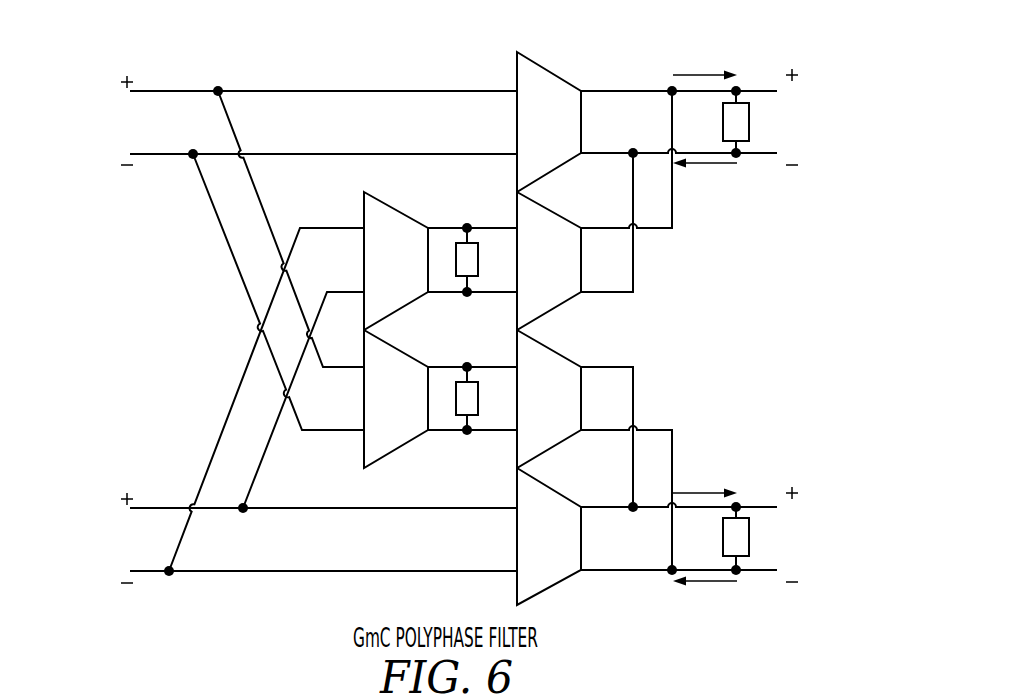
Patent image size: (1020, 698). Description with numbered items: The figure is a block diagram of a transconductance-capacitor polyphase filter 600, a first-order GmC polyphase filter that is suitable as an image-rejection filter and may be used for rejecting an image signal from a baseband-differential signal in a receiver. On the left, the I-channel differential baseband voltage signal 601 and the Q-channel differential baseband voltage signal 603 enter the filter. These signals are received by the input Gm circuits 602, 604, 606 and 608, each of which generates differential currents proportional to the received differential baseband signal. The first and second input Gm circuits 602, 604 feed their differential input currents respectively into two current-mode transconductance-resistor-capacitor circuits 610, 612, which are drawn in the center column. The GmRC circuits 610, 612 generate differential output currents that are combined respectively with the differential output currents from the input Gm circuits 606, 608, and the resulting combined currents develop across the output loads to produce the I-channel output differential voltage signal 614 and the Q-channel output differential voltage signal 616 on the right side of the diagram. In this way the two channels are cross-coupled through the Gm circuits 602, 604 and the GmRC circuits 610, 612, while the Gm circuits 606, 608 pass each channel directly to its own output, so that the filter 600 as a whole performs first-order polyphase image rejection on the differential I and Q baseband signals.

The GmC polyphase filter 600 is at (772, 52).
The I-channel differential baseband voltage signal 601 is at (110, 110).
The first input Gm circuit 602 is at (398, 211).
The Q-channel differential baseband voltage signal 603 is at (108, 527).
The second input Gm circuit 604 is at (398, 349).
The input Gm circuit 606 is at (550, 70).
The input Gm circuit 608 is at (550, 486).
The current-mode GmRC circuit 610 is at (550, 210).
The current-mode GmRC circuit 612 is at (550, 348).
The I-channel output differential voltage signal 614 is at (801, 122).
The Q-channel output differential voltage signal 616 is at (803, 538).